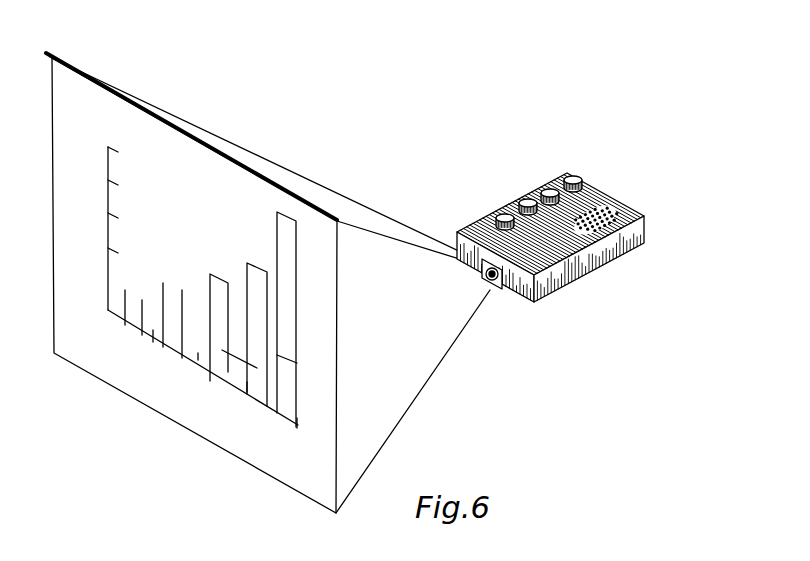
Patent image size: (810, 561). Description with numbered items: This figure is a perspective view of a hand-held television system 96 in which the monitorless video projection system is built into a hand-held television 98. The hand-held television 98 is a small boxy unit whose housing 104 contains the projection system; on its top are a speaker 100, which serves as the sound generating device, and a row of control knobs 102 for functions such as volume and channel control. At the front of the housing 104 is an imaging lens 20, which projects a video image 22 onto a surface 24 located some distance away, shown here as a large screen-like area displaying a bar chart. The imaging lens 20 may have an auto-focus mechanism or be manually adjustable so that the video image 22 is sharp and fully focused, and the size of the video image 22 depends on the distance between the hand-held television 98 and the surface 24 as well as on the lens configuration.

The imaging lens 20 is at (500, 290).
The video image 22 is at (252, 432).
The surface 24 is at (58, 82).
The hand-held television system 96 is at (424, 75).
The hand-held television 98 is at (570, 287).
The speaker 100 is at (607, 212).
The control knobs 102 is at (505, 214).
The housing 104 is at (550, 282).